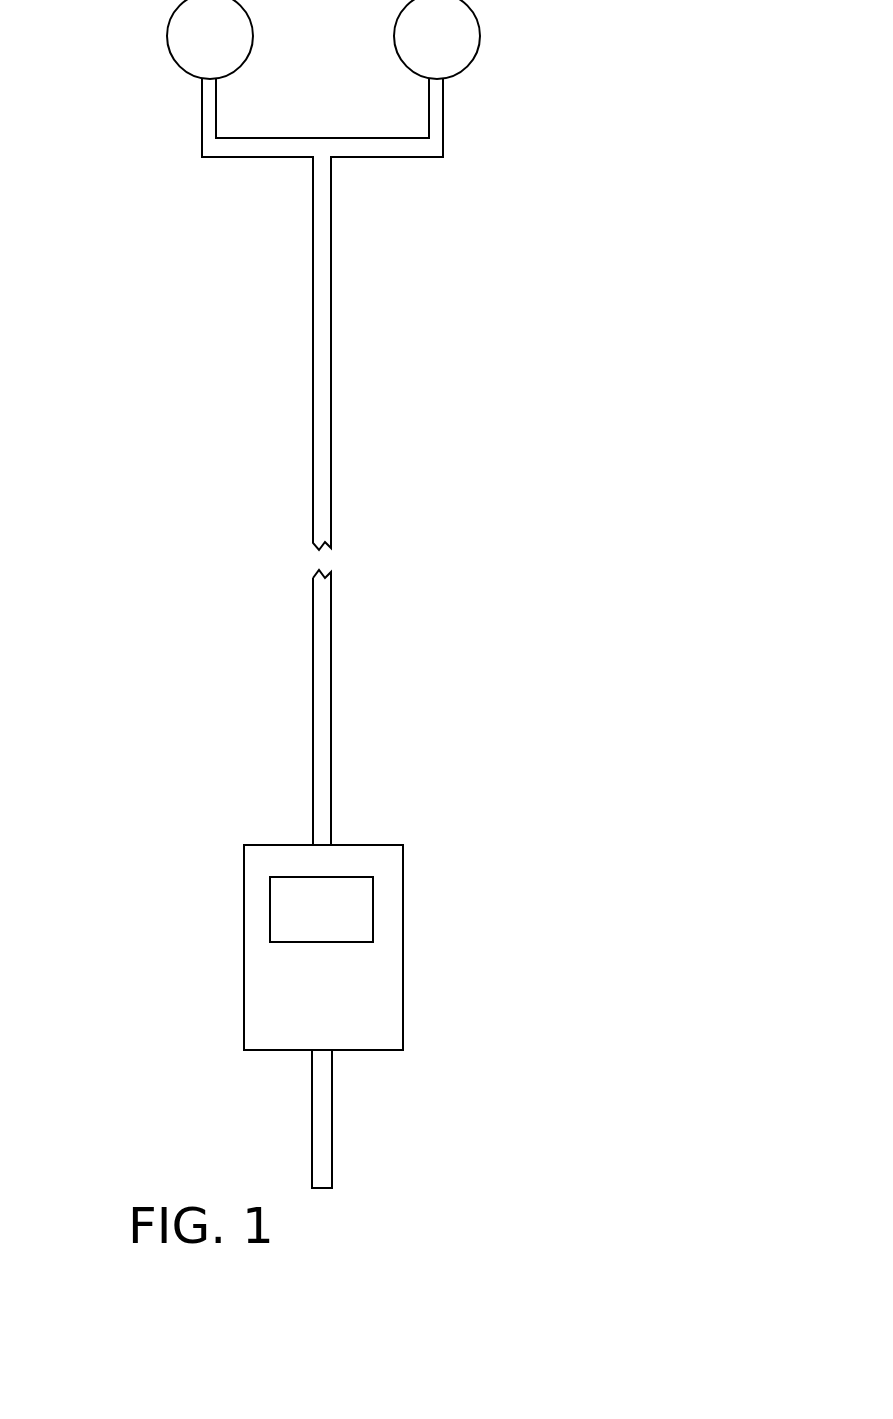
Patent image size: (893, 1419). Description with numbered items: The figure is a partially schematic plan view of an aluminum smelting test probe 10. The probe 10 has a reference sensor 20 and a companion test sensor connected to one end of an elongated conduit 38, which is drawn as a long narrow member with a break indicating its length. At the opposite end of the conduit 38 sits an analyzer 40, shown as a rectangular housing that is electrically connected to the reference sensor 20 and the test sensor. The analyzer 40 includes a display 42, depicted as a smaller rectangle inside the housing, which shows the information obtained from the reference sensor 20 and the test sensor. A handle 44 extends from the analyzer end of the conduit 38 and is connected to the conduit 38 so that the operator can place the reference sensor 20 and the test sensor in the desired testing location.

The test probe 10 is at (420, 390).
The reference sensor 20 is at (168, 33).
The conduit 38 is at (313, 517).
The analyzer 40 is at (393, 1008).
The display 42 is at (368, 913).
The handle 44 is at (332, 1134).